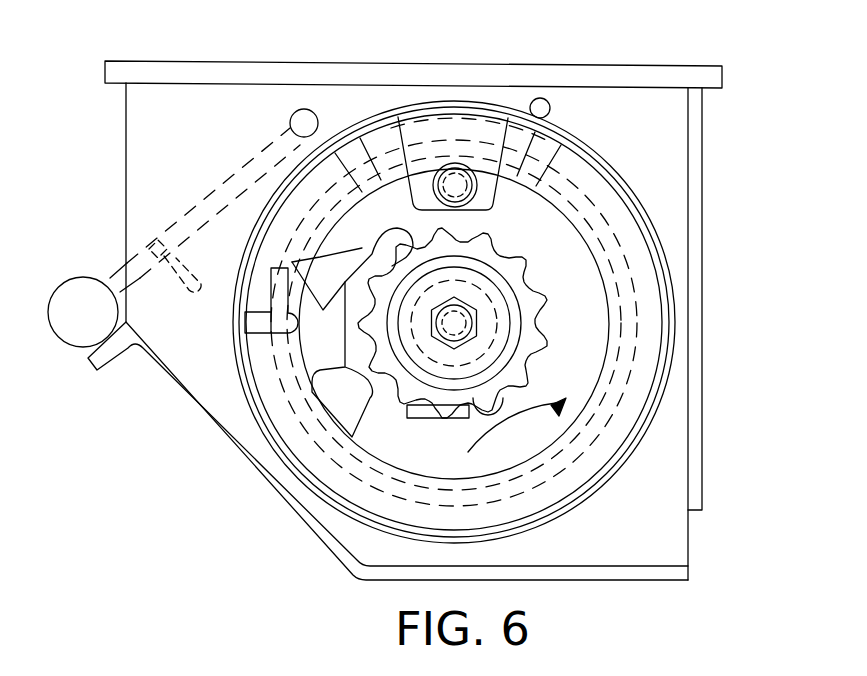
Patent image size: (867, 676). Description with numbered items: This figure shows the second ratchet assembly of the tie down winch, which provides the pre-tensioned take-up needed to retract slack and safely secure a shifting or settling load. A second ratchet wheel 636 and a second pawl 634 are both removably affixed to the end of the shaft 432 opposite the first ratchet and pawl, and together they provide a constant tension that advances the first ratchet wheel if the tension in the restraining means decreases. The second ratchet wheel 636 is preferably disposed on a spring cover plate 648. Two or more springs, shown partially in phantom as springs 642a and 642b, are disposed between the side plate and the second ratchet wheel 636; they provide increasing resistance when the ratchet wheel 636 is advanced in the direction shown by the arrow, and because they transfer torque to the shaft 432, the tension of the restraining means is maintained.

The second pawl 634 is at (332, 262).
The shaft 432 is at (437, 283).
The spring 642b is at (617, 260).
The spring 642a is at (373, 371).
The spring cover plate 648 is at (583, 380).
The second ratchet wheel 636 is at (468, 402).